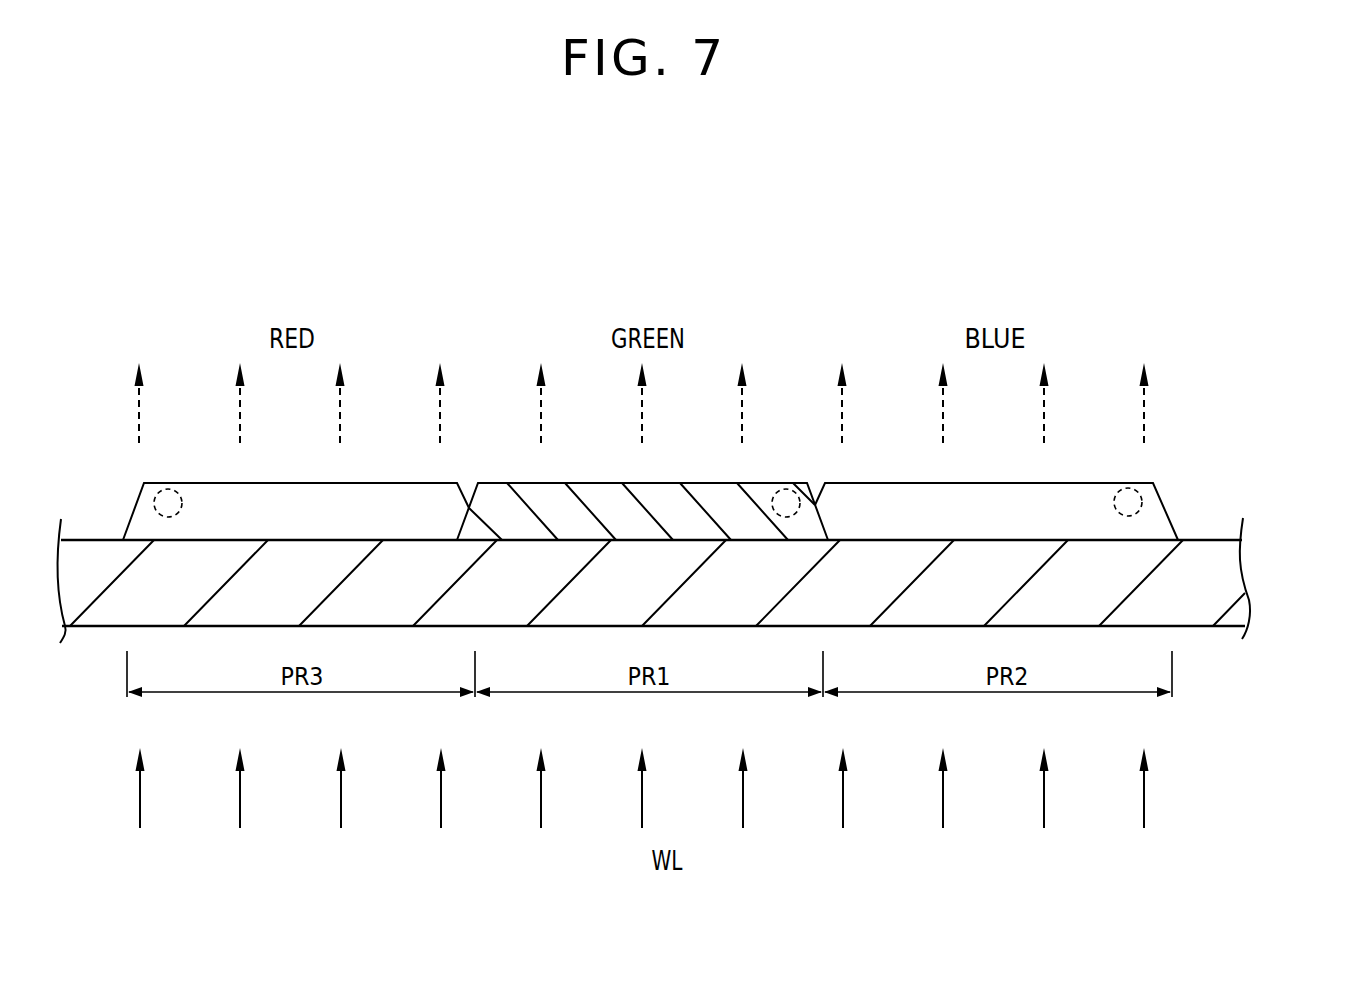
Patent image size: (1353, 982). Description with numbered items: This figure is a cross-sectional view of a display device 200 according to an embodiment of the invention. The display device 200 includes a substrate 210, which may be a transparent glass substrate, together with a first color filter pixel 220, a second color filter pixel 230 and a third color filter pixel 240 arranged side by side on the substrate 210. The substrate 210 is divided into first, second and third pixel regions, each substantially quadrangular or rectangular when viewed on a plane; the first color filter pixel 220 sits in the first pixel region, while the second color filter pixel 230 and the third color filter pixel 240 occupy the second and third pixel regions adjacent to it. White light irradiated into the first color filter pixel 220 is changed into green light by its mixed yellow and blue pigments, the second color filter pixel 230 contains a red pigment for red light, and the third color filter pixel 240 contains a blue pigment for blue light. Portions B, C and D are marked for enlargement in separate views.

The display device 200 is at (803, 343).
The substrate 210 is at (1232, 576).
The first color filter pixel 220 is at (590, 497).
The second color filter pixel 230 is at (290, 497).
The third color filter pixel 240 is at (998, 497).
The portion B is at (789, 489).
The portion C is at (1143, 502).
The portion D is at (156, 503).